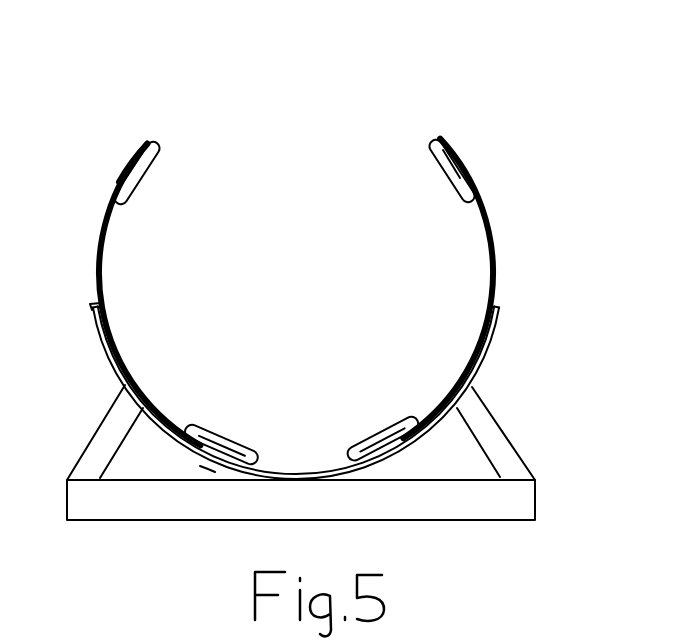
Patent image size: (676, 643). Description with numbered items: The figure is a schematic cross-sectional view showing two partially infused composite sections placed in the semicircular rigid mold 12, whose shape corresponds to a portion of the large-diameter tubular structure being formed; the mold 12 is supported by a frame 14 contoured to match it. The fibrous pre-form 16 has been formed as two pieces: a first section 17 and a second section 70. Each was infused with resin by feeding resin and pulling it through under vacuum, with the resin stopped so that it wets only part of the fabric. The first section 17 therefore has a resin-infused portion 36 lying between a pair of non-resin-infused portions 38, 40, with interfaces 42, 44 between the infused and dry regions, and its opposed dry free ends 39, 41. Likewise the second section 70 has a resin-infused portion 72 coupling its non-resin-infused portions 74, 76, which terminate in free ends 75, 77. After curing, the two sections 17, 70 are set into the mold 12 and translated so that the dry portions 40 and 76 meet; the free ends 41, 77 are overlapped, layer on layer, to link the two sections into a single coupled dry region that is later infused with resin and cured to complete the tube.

The rigid mold 12 is at (495, 333).
The frame 14 is at (505, 447).
The fibrous pre-form 16 is at (426, 102).
The first section 17 is at (123, 130).
The resin-infused portion 36 is at (107, 245).
The first non-resin-infused portion 38 is at (167, 135).
The non-resin-infused free end 39 is at (132, 197).
The second non-resin-infused portion 40 is at (237, 417).
The non-resin-infused free end 41 is at (218, 422).
The interface 42 is at (125, 162).
The interface 44 is at (207, 460).
The second section 70 is at (500, 181).
The resin-infused portion 72 is at (490, 260).
The non-resin-infused portion 74 is at (437, 157).
The non-resin-infused free end 75 is at (463, 198).
The non-resin-infused portion 76 is at (365, 412).
The non-resin-infused free end 77 is at (385, 425).